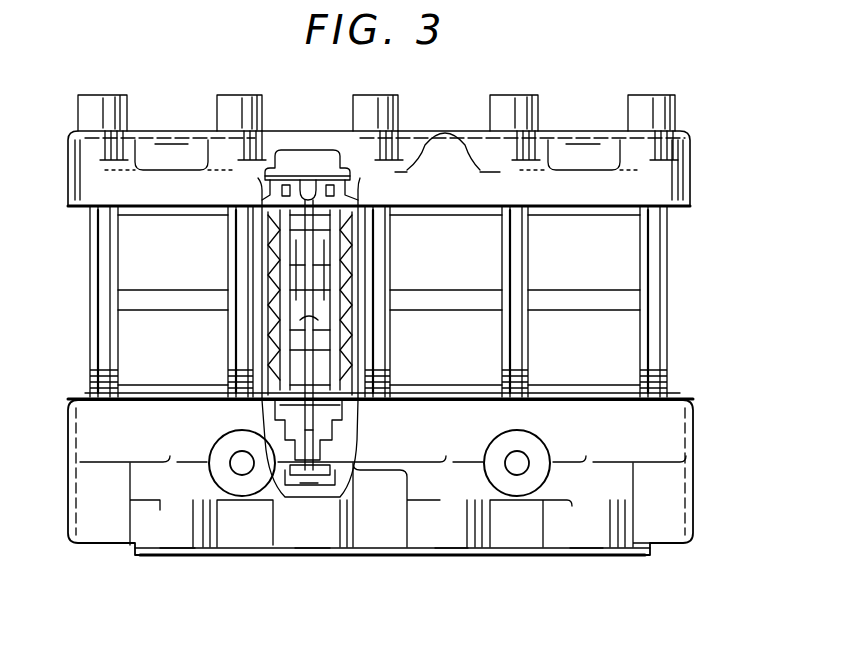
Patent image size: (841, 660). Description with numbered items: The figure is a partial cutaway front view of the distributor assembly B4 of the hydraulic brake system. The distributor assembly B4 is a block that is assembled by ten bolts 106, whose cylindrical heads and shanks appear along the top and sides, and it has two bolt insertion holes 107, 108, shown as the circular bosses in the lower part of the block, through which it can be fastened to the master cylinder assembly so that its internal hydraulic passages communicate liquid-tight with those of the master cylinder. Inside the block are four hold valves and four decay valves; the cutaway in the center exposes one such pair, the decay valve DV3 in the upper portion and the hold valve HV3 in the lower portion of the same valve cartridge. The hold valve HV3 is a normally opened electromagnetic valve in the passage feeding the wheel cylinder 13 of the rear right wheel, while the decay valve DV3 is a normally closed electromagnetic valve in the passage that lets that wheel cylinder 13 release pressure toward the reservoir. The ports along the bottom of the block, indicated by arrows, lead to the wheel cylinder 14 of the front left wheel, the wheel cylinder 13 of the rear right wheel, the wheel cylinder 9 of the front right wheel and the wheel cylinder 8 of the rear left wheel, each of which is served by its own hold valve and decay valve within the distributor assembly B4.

The distributor assembly B4 is at (606, 78).
The bolt 106 is at (655, 280).
The bolt insertion hole 107 is at (527, 460).
The bolt insertion hole 108 is at (233, 470).
The decay valve DV3 is at (300, 265).
The hold valve HV3 is at (325, 343).
The wheel cylinder 14 is at (175, 567).
The wheel cylinder 13 is at (313, 567).
The wheel cylinder 9 is at (451, 567).
The wheel cylinder 8 is at (586, 567).